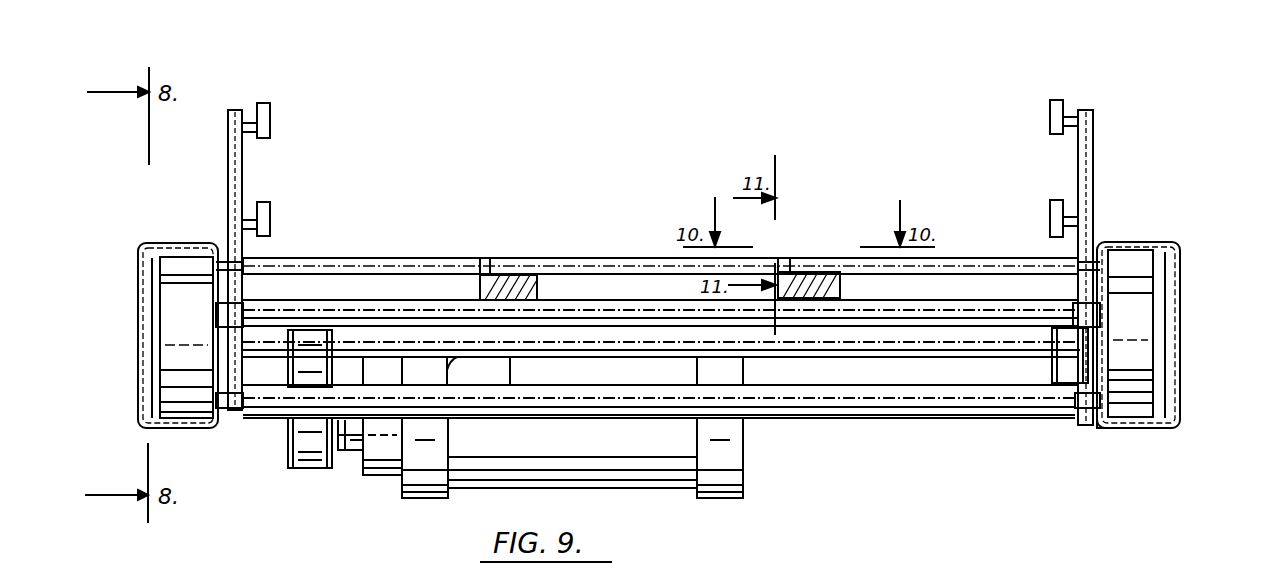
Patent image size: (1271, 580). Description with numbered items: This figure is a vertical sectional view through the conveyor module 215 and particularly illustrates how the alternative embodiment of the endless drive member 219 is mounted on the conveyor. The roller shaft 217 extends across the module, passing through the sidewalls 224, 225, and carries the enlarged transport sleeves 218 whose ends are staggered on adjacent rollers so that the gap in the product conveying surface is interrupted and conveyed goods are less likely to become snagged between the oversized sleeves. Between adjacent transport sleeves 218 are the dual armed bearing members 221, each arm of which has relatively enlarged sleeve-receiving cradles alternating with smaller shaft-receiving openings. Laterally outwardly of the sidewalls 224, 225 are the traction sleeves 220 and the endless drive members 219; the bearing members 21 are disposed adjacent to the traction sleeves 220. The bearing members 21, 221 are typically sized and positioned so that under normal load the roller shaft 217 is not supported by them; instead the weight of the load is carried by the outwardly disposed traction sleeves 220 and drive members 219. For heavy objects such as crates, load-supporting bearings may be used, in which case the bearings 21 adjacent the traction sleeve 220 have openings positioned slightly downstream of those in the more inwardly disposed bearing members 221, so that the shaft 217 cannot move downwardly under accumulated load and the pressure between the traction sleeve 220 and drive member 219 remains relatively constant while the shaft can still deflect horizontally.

The conveyor module 215 is at (1122, 152).
The roller shaft 217 is at (245, 262).
The transport sleeve 218 is at (327, 258).
The endless drive member 219 is at (195, 325).
The traction sleeve 220 is at (183, 245).
The bearing member 221 is at (480, 287).
The sidewall 224 is at (1105, 430).
The sidewall 225 is at (215, 385).
The bearing member 21 is at (196, 250).